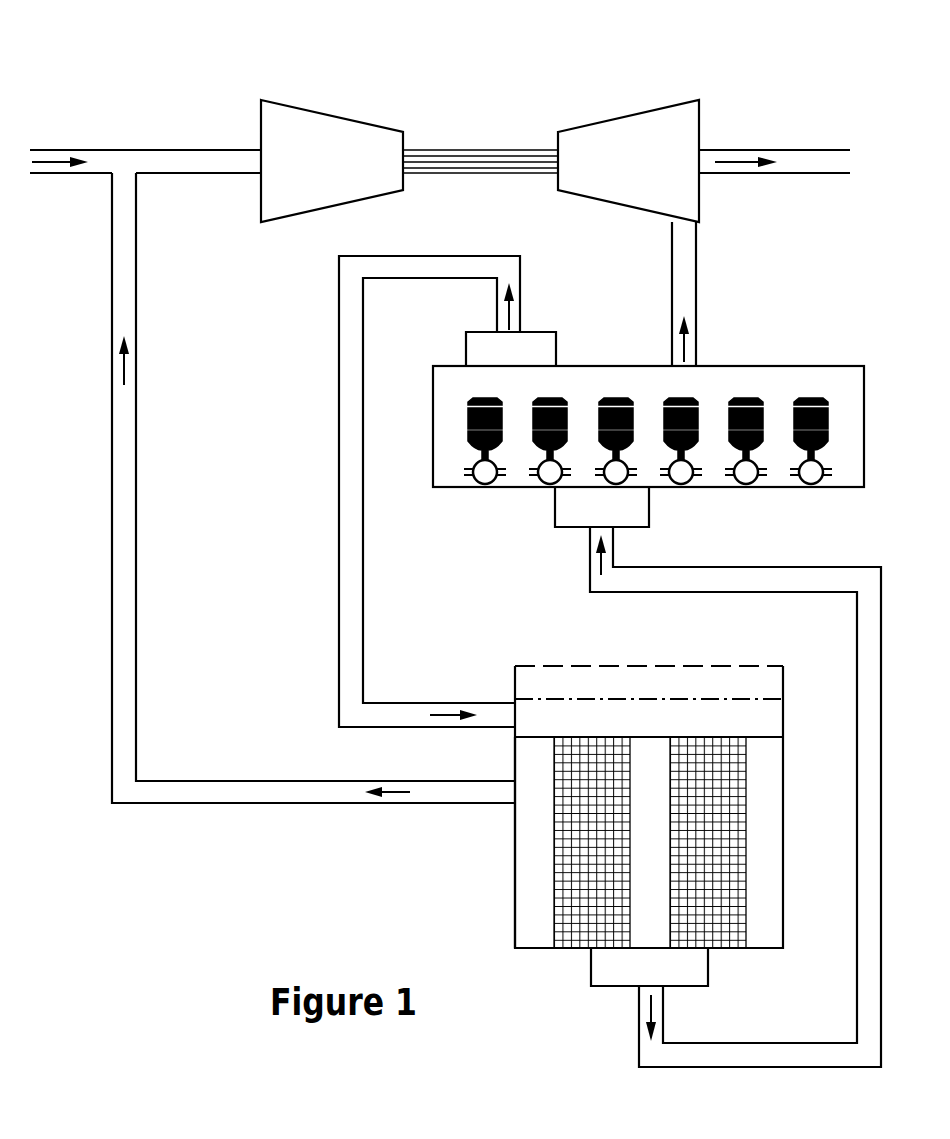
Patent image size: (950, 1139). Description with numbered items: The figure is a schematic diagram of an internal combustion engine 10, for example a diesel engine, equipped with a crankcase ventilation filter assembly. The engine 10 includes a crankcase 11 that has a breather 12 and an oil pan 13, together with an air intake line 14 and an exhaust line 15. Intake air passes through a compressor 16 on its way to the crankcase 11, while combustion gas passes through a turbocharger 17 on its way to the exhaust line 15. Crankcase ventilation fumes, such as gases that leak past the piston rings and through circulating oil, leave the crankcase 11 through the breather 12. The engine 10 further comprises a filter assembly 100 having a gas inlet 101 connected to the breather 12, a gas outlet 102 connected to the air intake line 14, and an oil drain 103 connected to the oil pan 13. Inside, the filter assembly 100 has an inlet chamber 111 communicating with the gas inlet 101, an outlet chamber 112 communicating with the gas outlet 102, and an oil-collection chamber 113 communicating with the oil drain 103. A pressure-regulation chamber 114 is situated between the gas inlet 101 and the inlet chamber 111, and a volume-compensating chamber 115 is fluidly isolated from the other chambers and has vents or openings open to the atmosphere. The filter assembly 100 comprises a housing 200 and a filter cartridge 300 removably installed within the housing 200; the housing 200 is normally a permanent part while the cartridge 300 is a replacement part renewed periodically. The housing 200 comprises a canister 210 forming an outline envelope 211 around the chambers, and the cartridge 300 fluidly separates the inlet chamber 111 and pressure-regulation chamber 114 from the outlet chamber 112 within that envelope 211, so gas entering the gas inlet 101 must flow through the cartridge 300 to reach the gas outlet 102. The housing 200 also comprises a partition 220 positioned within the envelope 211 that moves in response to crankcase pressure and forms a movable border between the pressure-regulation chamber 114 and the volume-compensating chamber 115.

The internal combustion engine 10 is at (232, 58).
The crankcase 11 is at (776, 378).
The breather 12 is at (524, 360).
The oil pan 13 is at (614, 518).
The air intake line 14 is at (100, 170).
The exhaust line 15 is at (796, 160).
The compressor 16 is at (338, 171).
The turbocharger 17 is at (648, 171).
The filter assembly 100 is at (634, 786).
The gas inlet 101 is at (515, 712).
The gas outlet 102 is at (515, 790).
The oil drain 103 is at (663, 989).
The inlet chamber 111 is at (663, 830).
The outlet chamber 112 is at (548, 830).
The oil-collection chamber 113 is at (672, 981).
The pressure-regulation chamber 114 is at (674, 730).
The volume-compensating chamber 115 is at (674, 698).
The housing 200 is at (760, 650).
The canister 210 is at (502, 870).
The outline envelope 211 is at (515, 927).
The partition 220 is at (750, 701).
The filter cartridge 300 is at (613, 821).